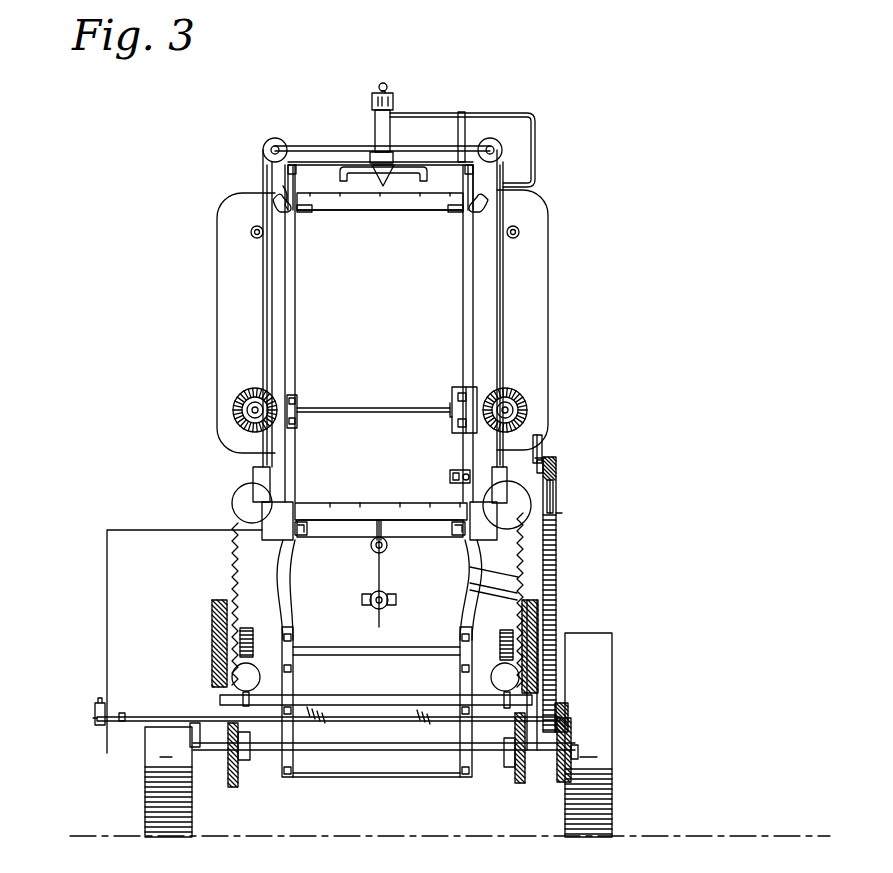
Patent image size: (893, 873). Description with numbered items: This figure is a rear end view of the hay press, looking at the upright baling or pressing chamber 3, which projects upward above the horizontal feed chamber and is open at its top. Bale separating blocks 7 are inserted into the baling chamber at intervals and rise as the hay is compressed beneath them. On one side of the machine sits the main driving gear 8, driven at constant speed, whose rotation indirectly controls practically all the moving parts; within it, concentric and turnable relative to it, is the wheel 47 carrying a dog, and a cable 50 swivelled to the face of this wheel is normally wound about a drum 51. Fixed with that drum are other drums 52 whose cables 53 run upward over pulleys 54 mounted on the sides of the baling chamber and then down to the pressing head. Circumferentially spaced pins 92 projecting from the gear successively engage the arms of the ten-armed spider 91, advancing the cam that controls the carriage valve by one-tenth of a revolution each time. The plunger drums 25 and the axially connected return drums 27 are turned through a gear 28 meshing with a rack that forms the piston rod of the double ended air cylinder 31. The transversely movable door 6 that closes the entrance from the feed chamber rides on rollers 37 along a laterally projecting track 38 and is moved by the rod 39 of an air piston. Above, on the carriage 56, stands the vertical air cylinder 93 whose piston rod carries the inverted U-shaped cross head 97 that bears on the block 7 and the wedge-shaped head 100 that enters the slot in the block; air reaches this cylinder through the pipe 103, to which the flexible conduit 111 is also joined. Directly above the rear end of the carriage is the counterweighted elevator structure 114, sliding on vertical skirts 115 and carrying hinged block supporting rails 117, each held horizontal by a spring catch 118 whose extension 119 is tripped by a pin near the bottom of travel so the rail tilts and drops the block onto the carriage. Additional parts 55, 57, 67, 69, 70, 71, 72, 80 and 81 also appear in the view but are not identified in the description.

The baling chamber 3 is at (455, 322).
The transversely movable door 6 is at (107, 582).
The bale separating blocks 7 is at (355, 205).
The main driving gear 8 is at (553, 457).
The drums 25 is at (276, 630).
The drums 27 is at (213, 622).
The gear 28 is at (240, 645).
The double ended air cylinder 31 is at (248, 677).
The rollers 37 is at (122, 723).
The track 38 is at (135, 715).
The rod 39 is at (95, 735).
The wheel 47 is at (558, 480).
The cable 50 is at (563, 708).
The drum 51 is at (568, 745).
The drums 52 is at (237, 785).
The cables 53 is at (233, 578).
The pulleys 54 is at (250, 513).
The clamp 55 is at (303, 522).
The carriage 56 is at (452, 535).
The adjusting rod 57 is at (370, 598).
The ratchet wheel 67 is at (237, 408).
The bearing bracket 69 is at (297, 395).
The shaft 70 is at (368, 407).
The bearing bracket 71 is at (458, 412).
The lever bracket 72 is at (480, 450).
The carriage frame 80 is at (484, 178).
The guide block 81 is at (296, 169).
The ten-armed spider 91 is at (540, 437).
The pins 92 is at (540, 472).
The air cylinder 93 is at (383, 128).
The cross head 97 is at (424, 178).
The wedge-shaped head 100 is at (385, 180).
The pipe 103 is at (389, 85).
The flexible conduit 111 is at (535, 135).
The counterweighted elevator structure 114 is at (283, 192).
The vertical skirts 115 is at (287, 300).
The block supporting rails 117 is at (303, 212).
The spring catch 118 is at (283, 197).
The extension 119 is at (500, 215).